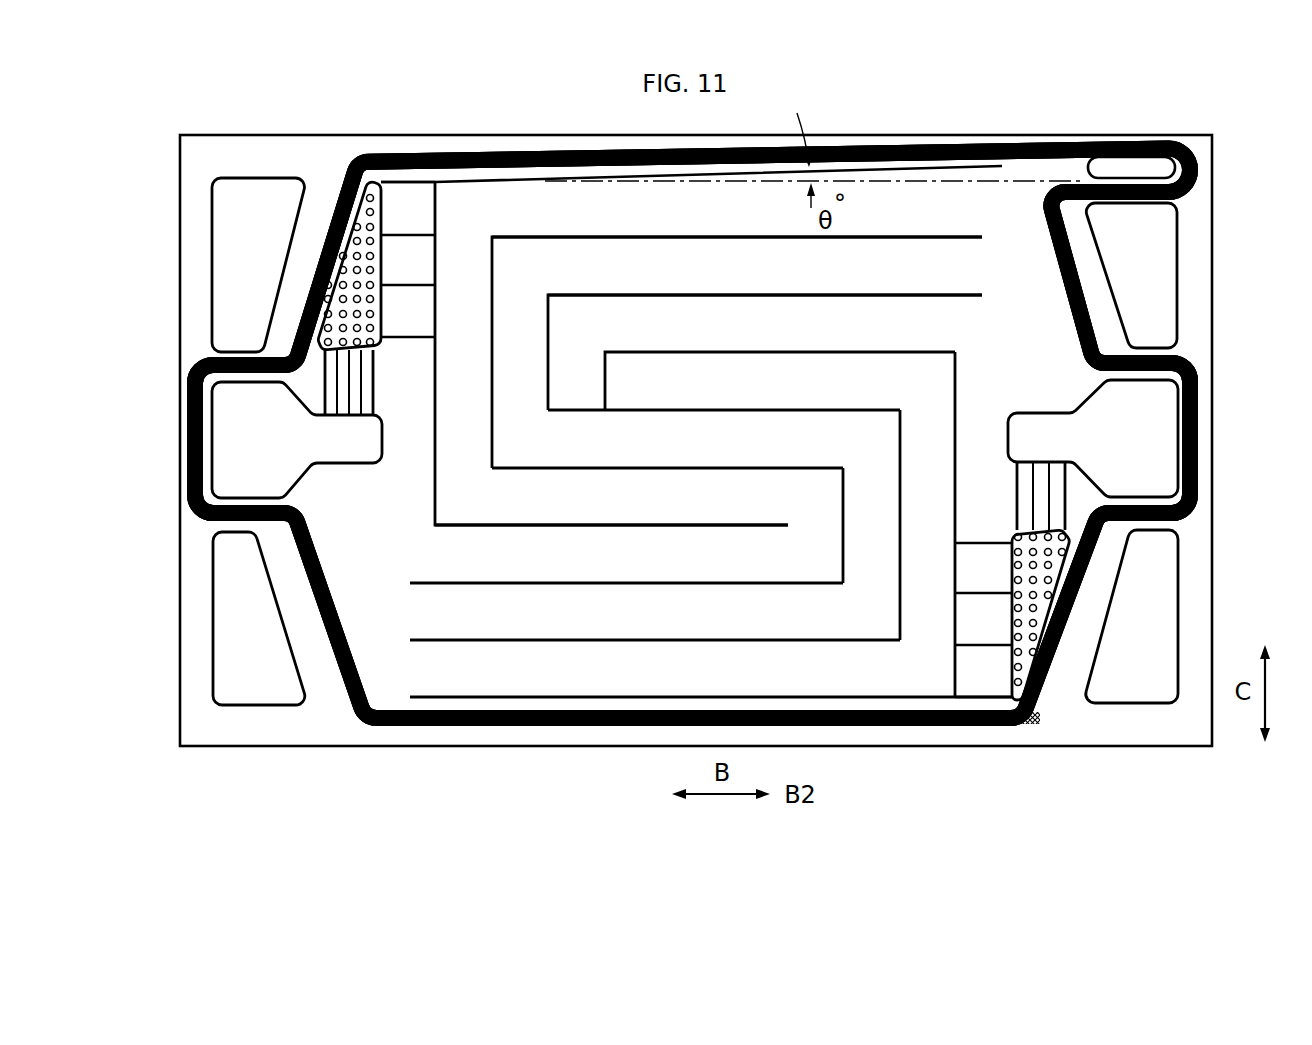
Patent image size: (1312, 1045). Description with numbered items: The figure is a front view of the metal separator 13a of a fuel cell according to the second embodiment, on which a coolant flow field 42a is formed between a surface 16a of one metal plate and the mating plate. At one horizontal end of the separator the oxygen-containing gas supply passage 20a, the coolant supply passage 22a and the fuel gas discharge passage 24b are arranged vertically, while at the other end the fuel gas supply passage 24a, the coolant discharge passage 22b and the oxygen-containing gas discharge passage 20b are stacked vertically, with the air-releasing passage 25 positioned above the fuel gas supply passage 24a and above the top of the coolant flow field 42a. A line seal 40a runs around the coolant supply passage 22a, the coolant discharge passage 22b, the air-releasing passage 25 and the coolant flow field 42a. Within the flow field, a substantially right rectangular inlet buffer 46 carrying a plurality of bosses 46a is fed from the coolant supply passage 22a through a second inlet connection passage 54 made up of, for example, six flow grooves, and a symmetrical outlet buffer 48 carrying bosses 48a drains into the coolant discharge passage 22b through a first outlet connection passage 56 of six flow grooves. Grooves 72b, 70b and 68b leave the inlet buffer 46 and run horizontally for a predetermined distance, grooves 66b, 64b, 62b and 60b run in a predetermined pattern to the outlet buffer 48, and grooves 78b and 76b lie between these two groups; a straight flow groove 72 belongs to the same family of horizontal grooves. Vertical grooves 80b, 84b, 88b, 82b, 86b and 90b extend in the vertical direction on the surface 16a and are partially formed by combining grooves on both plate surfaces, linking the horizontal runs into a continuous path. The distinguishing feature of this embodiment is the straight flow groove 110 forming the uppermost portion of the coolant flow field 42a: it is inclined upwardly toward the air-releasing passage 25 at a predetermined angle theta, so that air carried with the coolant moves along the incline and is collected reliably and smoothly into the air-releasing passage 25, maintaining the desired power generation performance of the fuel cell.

The metal separator 13a is at (409, 110).
The coolant flow field 42a is at (968, 176).
The air-releasing passage 25 is at (1135, 157).
The straight flow groove 110 is at (731, 184).
The inlet buffer 46 is at (385, 213).
The bosses 46a is at (377, 330).
The second inlet connection passage 54 is at (377, 396).
The oxygen-containing gas supply passage 20a is at (258, 265).
The coolant supply passage 22a is at (297, 440).
The fuel gas discharge passage 24b is at (259, 618).
The straight flow groove 72 is at (390, 708).
The fuel gas supply passage 24a is at (1131, 275).
The line seal 40a is at (1068, 287).
The coolant discharge passage 22b is at (1093, 438).
The oxygen-containing gas discharge passage 20b is at (1132, 616).
The surface of the second metal plate 16a is at (1000, 728).
The first outlet connection passage 56 is at (1015, 491).
The bosses 48a is at (1013, 568).
The outlet buffer 48 is at (1010, 658).
The groove 80b is at (437, 449).
The groove 84b is at (494, 418).
The groove 88b is at (550, 389).
The groove 68b is at (669, 354).
The flow channel groove 78b is at (669, 412).
The flow channel groove 76b is at (669, 470).
The groove 66b is at (669, 527).
The groove 64b is at (669, 585).
The groove 62b is at (669, 642).
The groove 60b is at (603, 696).
The groove 72b is at (669, 239).
The groove 70b is at (669, 297).
The groove 90b is at (845, 523).
The groove 86b is at (902, 491).
The groove 82b is at (957, 463).